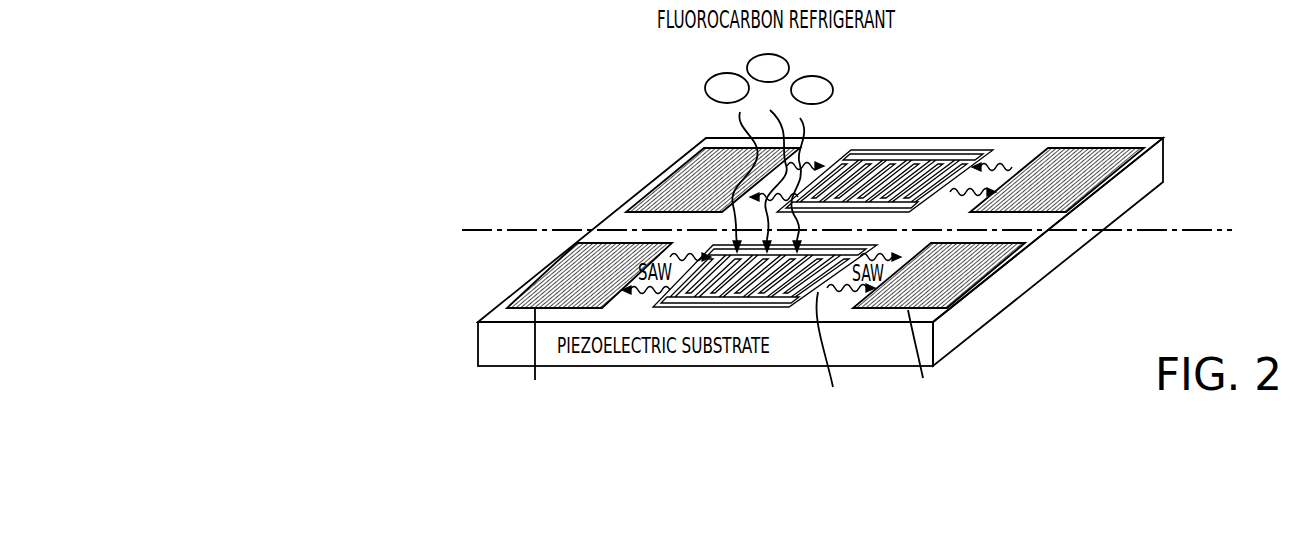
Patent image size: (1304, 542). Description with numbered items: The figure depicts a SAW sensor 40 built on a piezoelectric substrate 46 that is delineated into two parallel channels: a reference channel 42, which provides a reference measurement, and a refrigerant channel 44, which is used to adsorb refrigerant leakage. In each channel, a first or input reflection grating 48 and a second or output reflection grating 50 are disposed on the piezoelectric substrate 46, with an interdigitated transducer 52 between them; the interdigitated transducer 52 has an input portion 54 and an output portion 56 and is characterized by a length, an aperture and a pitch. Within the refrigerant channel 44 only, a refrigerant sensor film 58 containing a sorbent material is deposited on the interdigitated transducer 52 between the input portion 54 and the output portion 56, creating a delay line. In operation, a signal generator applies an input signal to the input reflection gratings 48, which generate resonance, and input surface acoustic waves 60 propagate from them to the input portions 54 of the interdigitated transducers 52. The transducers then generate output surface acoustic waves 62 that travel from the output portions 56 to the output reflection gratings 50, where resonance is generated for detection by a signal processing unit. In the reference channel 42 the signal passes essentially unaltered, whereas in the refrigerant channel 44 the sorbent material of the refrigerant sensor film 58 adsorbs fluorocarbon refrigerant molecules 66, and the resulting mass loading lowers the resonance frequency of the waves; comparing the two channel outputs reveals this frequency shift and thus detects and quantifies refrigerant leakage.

The SAW sensor 40 is at (485, 92).
The reference channel 42 is at (508, 158).
The refrigerant channel 44 is at (340, 272).
The piezoelectric substrate 46 is at (1015, 281).
The input reflection grating 48 is at (692, 165).
The output reflection grating 50 is at (1080, 160).
The interdigitated transducer 52 is at (920, 158).
The input portion 54 is at (838, 152).
The output portion 56 is at (975, 158).
The refrigerant sensor film 58 is at (767, 290).
The input surface acoustic waves 60 is at (760, 143).
The output surface acoustic waves 62 is at (1017, 148).
The fluorocarbon refrigerant molecules 66 is at (716, 76).